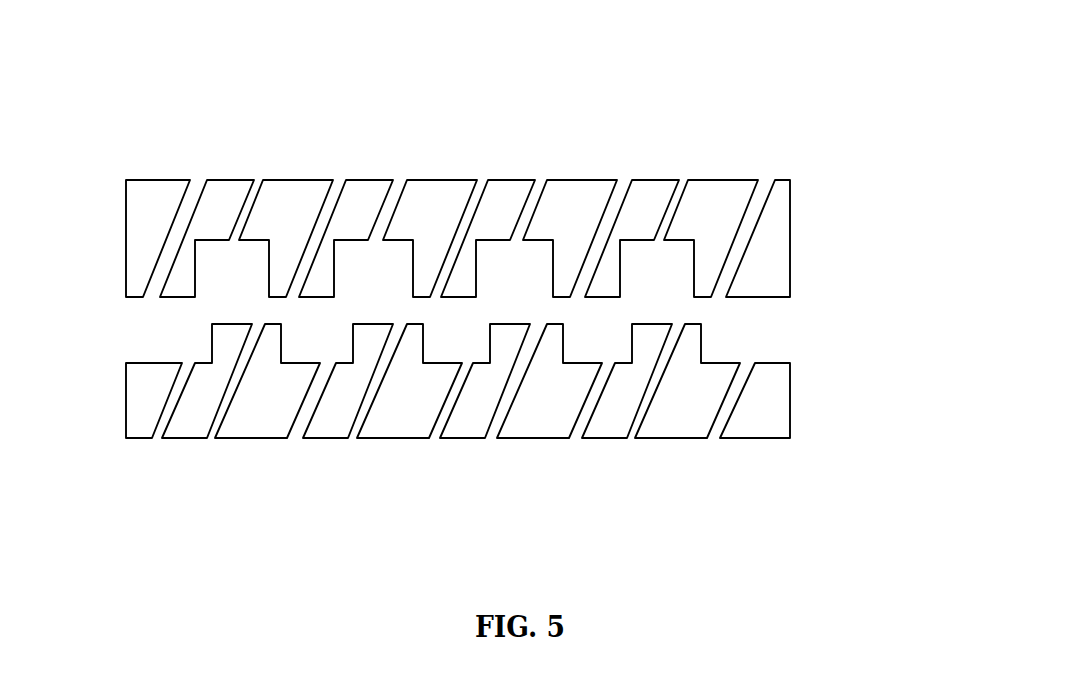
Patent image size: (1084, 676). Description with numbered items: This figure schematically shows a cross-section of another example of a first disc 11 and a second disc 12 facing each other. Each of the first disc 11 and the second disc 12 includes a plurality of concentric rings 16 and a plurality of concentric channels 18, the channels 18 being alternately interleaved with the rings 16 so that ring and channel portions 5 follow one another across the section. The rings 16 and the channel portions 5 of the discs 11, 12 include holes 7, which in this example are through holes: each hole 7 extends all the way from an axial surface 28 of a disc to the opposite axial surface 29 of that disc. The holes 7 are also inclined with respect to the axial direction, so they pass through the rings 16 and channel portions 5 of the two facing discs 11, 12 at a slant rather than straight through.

The channel portions 5 is at (512, 207).
The holes 7 is at (625, 192).
The first disc 11 is at (445, 178).
The second disc 12 is at (673, 442).
The concentric rings 16 is at (780, 250).
The concentric channels 18 is at (667, 270).
The axial surface 28 is at (300, 178).
The opposite axial surface 29 is at (317, 296).